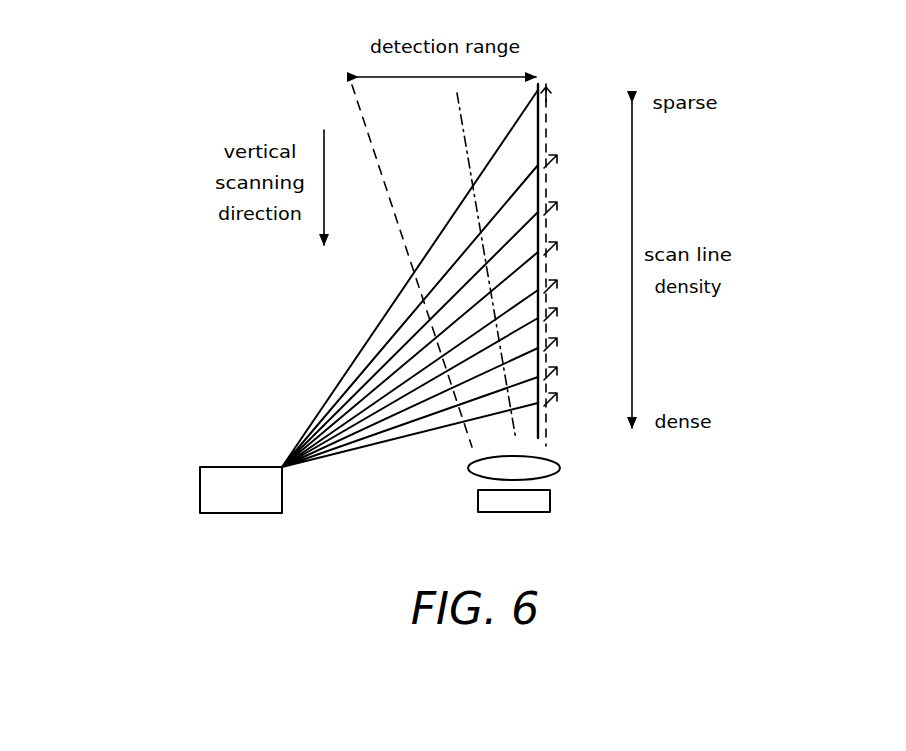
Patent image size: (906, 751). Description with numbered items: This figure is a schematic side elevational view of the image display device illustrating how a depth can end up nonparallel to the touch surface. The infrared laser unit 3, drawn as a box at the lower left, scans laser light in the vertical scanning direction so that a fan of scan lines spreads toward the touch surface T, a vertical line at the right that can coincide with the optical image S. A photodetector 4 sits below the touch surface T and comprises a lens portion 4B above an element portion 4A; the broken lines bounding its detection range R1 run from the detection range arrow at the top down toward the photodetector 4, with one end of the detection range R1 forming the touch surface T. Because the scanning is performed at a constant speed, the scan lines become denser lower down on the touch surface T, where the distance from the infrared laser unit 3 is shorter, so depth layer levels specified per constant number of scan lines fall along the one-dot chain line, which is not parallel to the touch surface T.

The infrared laser unit 3 is at (200, 490).
The photodetector 4 is at (577, 485).
The light receiving element 4A is at (550, 500).
The light receiving lens 4B is at (560, 466).
The detection range R1 is at (400, 238).
The optical image S is at (538, 140).
The touch surface T is at (548, 124).